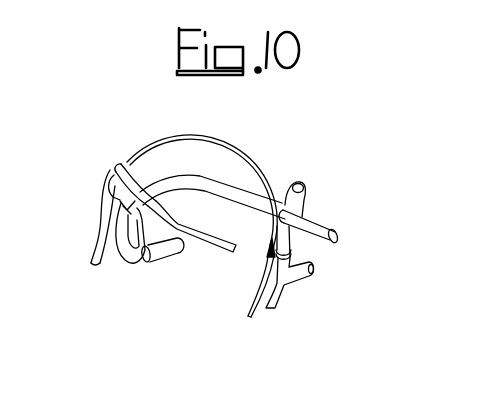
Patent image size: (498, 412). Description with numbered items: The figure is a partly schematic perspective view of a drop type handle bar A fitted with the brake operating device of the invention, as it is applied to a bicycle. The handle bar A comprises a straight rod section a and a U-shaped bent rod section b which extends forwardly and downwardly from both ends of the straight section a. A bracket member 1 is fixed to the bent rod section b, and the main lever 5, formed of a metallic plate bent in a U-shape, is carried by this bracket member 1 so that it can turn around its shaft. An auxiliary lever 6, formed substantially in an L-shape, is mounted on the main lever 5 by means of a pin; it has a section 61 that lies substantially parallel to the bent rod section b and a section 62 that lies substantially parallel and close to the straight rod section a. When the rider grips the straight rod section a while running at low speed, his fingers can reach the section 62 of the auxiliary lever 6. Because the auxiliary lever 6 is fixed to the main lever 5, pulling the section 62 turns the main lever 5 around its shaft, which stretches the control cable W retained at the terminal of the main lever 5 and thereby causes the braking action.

The control cable W is at (204, 135).
The straight rod section a is at (247, 196).
The drop type handle bar A is at (317, 216).
The auxiliary lever 6 is at (122, 180).
The main lever 5 is at (113, 192).
The bracket member 1 is at (119, 208).
The bent rod section b is at (121, 247).
The section of auxiliary lever 61 is at (140, 263).
The section of auxiliary lever 62 is at (197, 245).